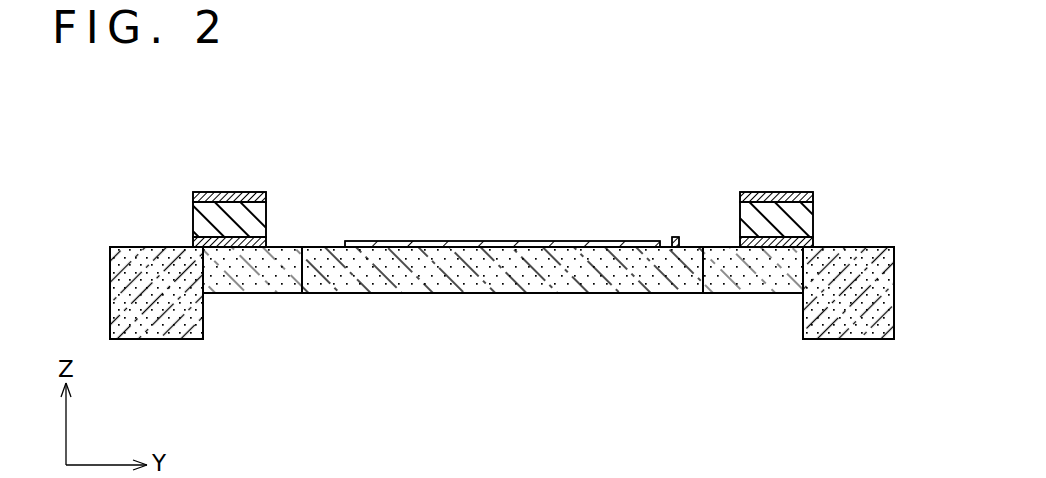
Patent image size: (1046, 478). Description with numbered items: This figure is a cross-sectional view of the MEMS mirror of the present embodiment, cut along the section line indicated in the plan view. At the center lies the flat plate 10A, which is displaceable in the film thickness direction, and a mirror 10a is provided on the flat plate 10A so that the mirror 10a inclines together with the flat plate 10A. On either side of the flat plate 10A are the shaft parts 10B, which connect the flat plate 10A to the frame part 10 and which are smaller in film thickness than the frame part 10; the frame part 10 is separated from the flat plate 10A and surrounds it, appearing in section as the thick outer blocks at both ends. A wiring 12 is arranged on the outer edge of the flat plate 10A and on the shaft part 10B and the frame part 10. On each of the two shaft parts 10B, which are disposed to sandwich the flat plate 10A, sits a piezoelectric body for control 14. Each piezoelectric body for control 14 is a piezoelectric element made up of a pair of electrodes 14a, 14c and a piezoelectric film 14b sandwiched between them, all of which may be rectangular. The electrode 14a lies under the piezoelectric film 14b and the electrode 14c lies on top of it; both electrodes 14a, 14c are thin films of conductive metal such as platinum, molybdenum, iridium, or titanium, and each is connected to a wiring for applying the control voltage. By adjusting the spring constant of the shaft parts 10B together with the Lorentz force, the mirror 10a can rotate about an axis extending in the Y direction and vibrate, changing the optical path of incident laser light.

The frame part 10 is at (165, 322).
The flat plate 10A is at (547, 293).
The shaft part 10B is at (265, 268).
The mirror 10a is at (552, 242).
The wiring 12 is at (674, 237).
The piezoelectric body for control 14 is at (571, 179).
The electrode 14a is at (547, 219).
The piezoelectric film 14b is at (266, 220).
The electrode 14c is at (266, 193).